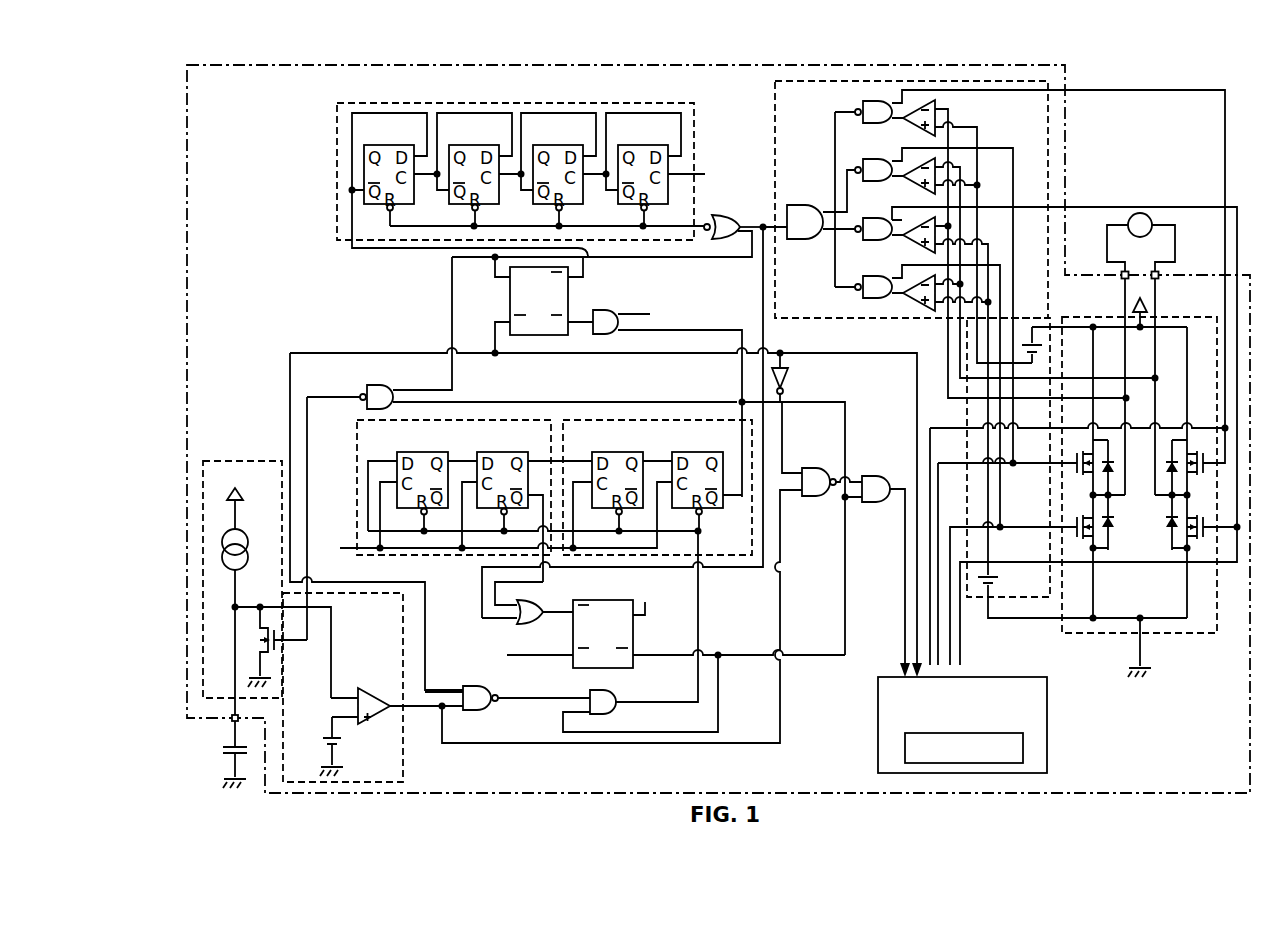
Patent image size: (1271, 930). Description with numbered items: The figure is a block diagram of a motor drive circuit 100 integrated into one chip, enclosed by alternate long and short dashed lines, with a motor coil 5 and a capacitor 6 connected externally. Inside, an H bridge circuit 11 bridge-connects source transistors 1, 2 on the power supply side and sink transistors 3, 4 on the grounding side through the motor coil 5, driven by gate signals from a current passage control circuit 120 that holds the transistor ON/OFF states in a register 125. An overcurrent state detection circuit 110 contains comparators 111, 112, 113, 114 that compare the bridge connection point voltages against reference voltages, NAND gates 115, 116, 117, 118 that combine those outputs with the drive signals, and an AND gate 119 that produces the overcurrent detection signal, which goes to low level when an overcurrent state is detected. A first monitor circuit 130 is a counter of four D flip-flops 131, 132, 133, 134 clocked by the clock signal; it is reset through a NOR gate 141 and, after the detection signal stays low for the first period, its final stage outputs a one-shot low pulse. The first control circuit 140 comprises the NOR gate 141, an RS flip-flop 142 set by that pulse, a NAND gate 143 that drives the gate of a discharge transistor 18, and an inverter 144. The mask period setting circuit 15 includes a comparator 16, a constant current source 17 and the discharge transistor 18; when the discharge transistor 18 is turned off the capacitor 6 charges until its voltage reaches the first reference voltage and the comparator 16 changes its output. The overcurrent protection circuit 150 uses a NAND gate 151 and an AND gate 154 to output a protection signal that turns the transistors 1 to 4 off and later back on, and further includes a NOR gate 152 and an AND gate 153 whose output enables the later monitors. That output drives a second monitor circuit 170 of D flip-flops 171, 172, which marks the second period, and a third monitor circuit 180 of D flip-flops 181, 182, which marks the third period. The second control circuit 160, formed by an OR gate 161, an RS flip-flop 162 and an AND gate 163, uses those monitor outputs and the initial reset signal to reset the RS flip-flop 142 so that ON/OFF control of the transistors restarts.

The motor drive circuit 100 is at (1005, 65).
The overcurrent state detection circuit 110 is at (812, 81).
The comparator 111 is at (902, 116).
The comparator 112 is at (902, 176).
The comparator 113 is at (902, 231).
The comparator 114 is at (902, 284).
The NAND gate 115 is at (852, 112).
The NAND gate 116 is at (842, 170).
The NAND gate 117 is at (846, 222).
The NAND gate 118 is at (856, 282).
The AND gate 119 is at (800, 266).
The current passage control circuit 120 is at (998, 725).
The register 125 is at (1023, 748).
The first monitor circuit 130 is at (634, 103).
The D flip-flop 131 is at (654, 137).
The D flip-flop 132 is at (569, 137).
The D flip-flop 133 is at (485, 137).
The D flip-flop 134 is at (400, 137).
The first control circuit 140 is at (426, 325).
The NOR gate 141 is at (716, 218).
The RS flip-flop 142 is at (570, 312).
The NAND gate 143 is at (370, 387).
The inverter 144 is at (790, 381).
The overcurrent protection circuit 150 is at (803, 685).
The NAND gate 151 is at (815, 496).
The NOR gate 152 is at (480, 692).
The AND gate 153 is at (605, 692).
The AND gate 154 is at (877, 506).
The second control circuit 160 is at (472, 635).
The OR gate 161 is at (552, 606).
The RS flip-flop 162 is at (608, 602).
The AND gate 163 is at (612, 306).
The second monitor circuit 170 is at (501, 419).
The D flip-flop 171 is at (422, 452).
The D flip-flop 172 is at (502, 452).
The third monitor circuit 180 is at (604, 419).
The D flip-flop 181 is at (617, 452).
The D flip-flop 182 is at (697, 452).
The motor coil 5 is at (1152, 220).
The H bridge circuit 11 is at (1174, 318).
The source transistor 1 is at (1080, 444).
The source transistor 2 is at (1200, 444).
The sink transistor 3 is at (1073, 562).
The sink transistor 4 is at (1213, 562).
The mask period setting circuit 15 is at (243, 460).
The comparator 16 is at (374, 688).
The constant current source 17 is at (244, 545).
The discharge transistor 18 is at (276, 636).
The capacitor 6 is at (222, 744).